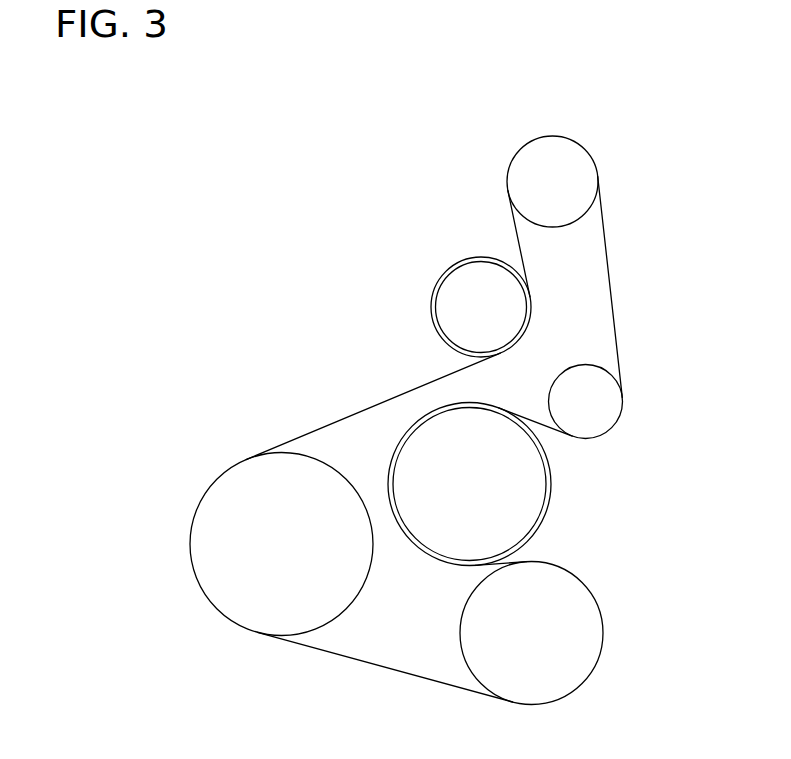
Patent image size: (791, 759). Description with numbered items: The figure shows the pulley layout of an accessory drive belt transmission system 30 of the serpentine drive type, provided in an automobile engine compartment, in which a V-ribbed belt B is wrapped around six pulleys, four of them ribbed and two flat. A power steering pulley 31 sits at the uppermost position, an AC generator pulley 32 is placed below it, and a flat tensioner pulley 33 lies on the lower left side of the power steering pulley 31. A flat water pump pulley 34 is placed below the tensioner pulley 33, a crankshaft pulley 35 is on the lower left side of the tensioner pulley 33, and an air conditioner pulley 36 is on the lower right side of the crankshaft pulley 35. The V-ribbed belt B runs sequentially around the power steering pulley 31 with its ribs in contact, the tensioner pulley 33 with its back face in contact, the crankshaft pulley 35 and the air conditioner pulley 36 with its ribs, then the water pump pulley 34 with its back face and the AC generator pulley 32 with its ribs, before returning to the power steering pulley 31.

The accessory drive belt transmission system 30 is at (352, 147).
The V-ribbed belt B is at (372, 406).
The power steering pulley 31 is at (577, 156).
The AC generator pulley 32 is at (597, 415).
The tensioner pulley 33 is at (460, 283).
The water pump pulley 34 is at (527, 483).
The crankshaft pulley 35 is at (237, 613).
The air conditioner pulley 36 is at (583, 643).